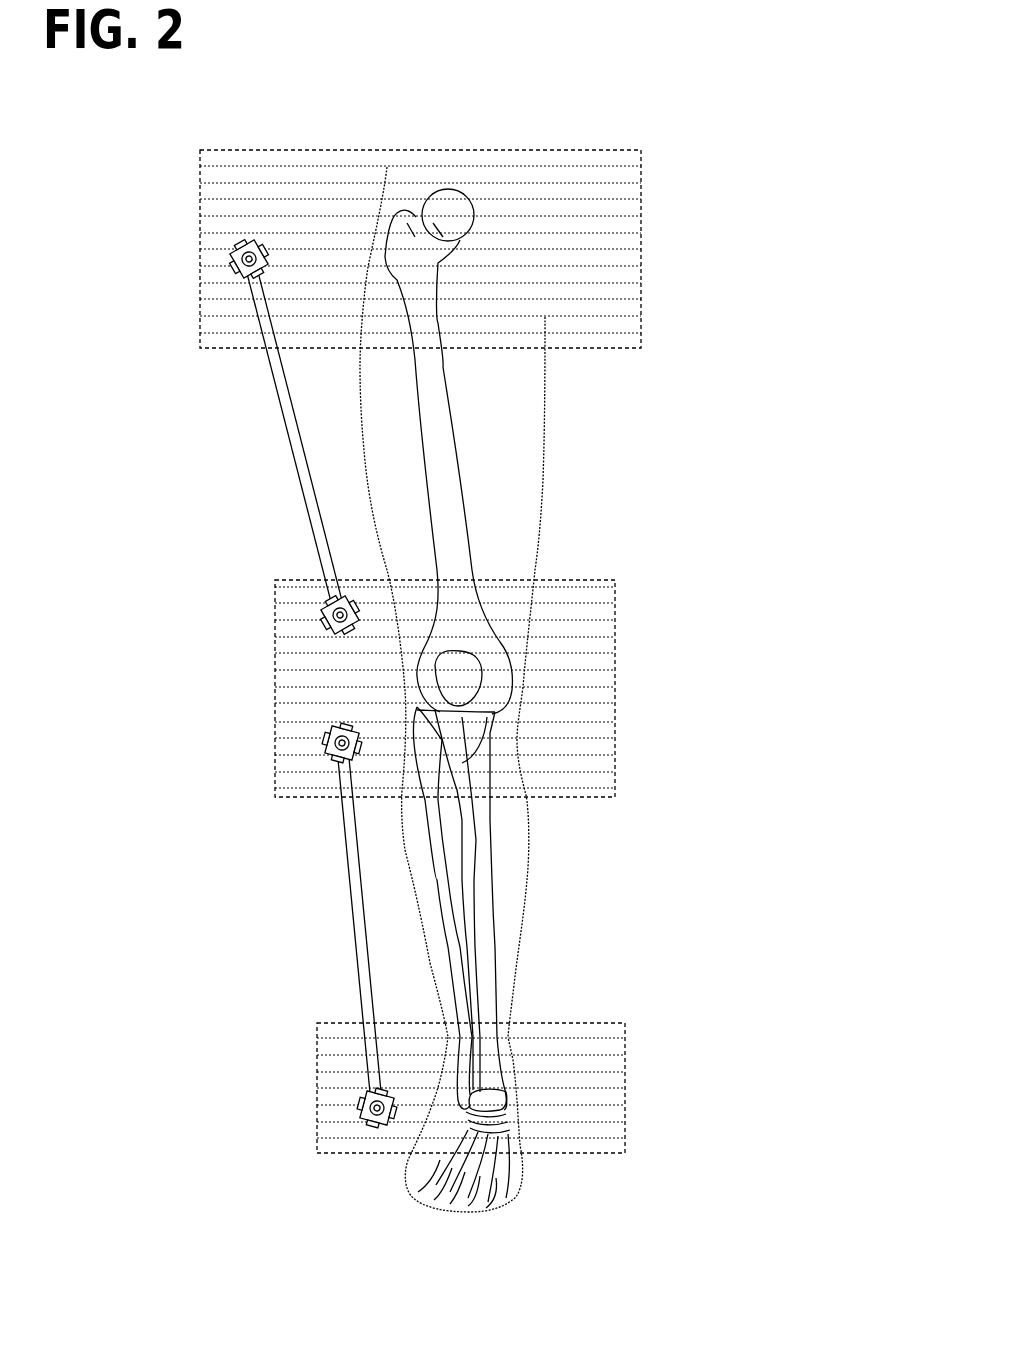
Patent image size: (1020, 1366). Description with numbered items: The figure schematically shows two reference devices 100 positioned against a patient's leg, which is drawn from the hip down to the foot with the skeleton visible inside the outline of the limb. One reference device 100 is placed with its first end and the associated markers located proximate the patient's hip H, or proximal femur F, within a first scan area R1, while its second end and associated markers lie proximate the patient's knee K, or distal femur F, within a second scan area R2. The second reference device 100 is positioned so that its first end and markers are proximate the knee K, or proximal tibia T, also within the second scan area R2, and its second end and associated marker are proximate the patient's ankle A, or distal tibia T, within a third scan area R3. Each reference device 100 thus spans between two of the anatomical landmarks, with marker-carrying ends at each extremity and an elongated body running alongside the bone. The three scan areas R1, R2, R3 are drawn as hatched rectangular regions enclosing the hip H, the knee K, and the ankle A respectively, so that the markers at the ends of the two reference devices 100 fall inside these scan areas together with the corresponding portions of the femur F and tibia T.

The reference device 100 is at (278, 448).
The hip H is at (380, 177).
The femur F is at (415, 392).
The knee K is at (543, 703).
The tibia T is at (492, 853).
The ankle A is at (553, 1085).
The first scan area R1 is at (652, 182).
The second scan area R2 is at (627, 633).
The third scan area R3 is at (640, 1090).